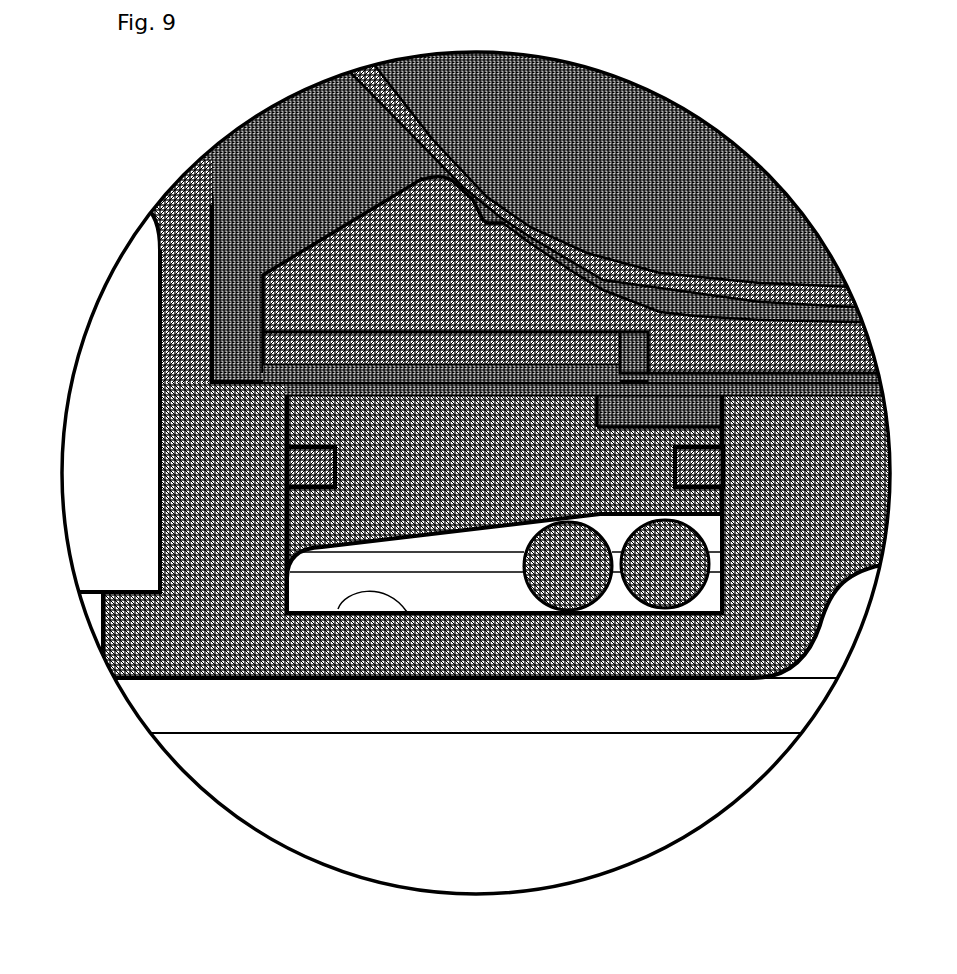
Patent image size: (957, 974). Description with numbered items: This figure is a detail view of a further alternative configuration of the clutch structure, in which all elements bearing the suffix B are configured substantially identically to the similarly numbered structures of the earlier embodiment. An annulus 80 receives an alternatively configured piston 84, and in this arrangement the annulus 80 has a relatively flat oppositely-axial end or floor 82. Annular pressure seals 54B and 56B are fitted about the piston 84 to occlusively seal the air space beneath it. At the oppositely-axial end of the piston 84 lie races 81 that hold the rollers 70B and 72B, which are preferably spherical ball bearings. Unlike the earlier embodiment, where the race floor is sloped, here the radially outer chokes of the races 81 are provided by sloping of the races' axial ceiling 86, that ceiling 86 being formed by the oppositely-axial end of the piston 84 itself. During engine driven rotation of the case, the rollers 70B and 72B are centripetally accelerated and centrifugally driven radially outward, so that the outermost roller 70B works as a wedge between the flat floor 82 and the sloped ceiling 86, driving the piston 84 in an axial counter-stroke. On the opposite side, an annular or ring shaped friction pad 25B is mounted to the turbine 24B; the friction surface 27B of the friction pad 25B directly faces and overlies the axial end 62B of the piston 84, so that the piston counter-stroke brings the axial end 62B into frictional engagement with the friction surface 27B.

The turbine 24B is at (697, 345).
The friction pad 25B is at (420, 350).
The friction surface 27B is at (373, 370).
The axial end of piston 62B is at (480, 395).
The piston 84 is at (383, 433).
The annular pressure seal 54B is at (313, 465).
The annular pressure seal 56B is at (693, 468).
The axial ceiling of races 86 is at (360, 547).
The floor of annulus 82 is at (338, 608).
The annulus 80 is at (453, 592).
The races 81 is at (497, 547).
The roller 70B is at (563, 585).
The roller 72B is at (663, 577).